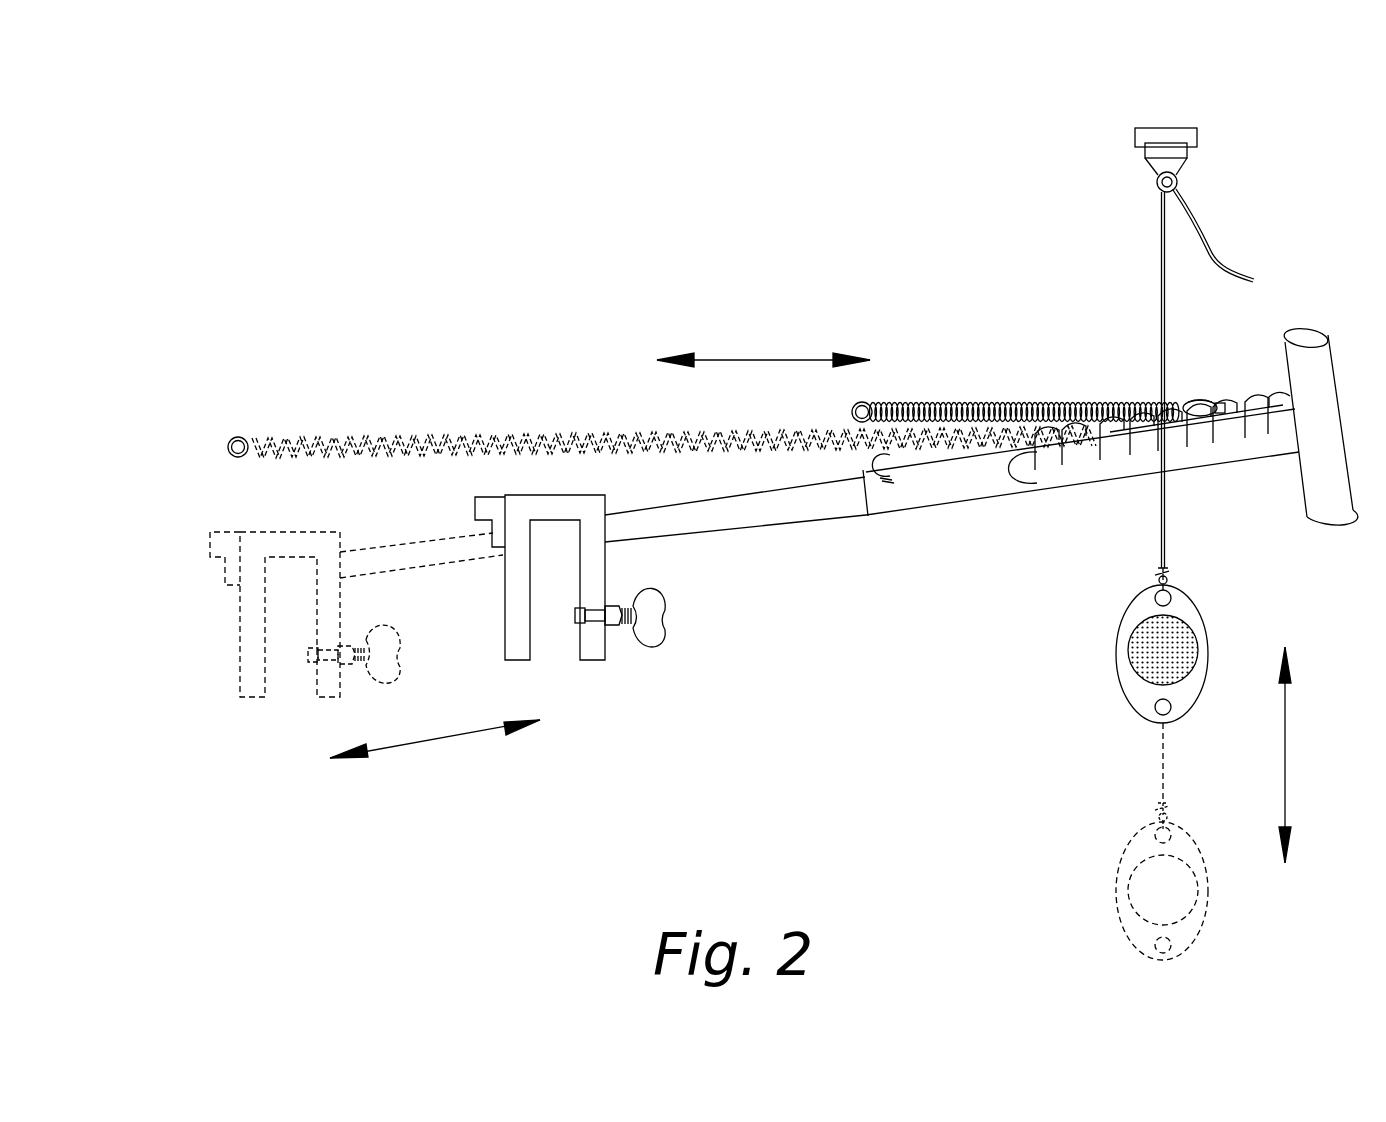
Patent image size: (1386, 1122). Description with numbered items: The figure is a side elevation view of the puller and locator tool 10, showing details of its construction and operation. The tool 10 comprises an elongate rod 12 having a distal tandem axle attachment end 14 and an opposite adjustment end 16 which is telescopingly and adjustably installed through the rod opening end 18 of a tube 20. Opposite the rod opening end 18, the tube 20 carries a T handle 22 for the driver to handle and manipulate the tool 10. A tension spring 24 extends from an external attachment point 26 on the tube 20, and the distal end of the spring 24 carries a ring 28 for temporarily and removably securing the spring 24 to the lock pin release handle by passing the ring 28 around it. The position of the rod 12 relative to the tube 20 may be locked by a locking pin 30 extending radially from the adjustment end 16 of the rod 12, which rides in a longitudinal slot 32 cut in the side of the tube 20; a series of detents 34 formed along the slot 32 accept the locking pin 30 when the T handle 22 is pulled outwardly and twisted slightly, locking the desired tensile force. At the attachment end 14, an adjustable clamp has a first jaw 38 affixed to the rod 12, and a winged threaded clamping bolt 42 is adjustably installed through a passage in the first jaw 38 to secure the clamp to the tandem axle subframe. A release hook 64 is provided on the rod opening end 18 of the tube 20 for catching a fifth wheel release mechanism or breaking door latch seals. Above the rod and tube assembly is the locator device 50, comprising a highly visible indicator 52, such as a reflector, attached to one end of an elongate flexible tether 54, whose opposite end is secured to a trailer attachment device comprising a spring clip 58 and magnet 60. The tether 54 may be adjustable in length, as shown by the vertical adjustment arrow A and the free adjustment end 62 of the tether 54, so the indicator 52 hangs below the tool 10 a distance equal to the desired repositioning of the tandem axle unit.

The tool 10 is at (856, 765).
The elongate rod 12 is at (774, 524).
The tandem axle attachment end 14 is at (360, 546).
The adjustment end 16 is at (1210, 440).
The rod opening end 18 is at (865, 518).
The tube 20 is at (978, 499).
The T handle 22 is at (1313, 329).
The tension spring 24 is at (560, 432).
The external attachment point 26 is at (1232, 405).
The ring 28 is at (250, 438).
The locking pin 30 is at (1179, 430).
The longitudinal slot 32 is at (1135, 462).
The detents 34 is at (1100, 460).
The first jaw 38 is at (486, 586).
The winged threaded clamping bolt 42 is at (637, 640).
The locator device 50 is at (1187, 759).
The indicator 52 is at (1122, 857).
The tether 54 is at (1160, 295).
The spring clip 58 is at (1137, 143).
The magnet 60 is at (1157, 186).
The free adjustment end 62 is at (1205, 235).
The release hook 64 is at (875, 455).
The vertical adjustment arrow A is at (1288, 745).